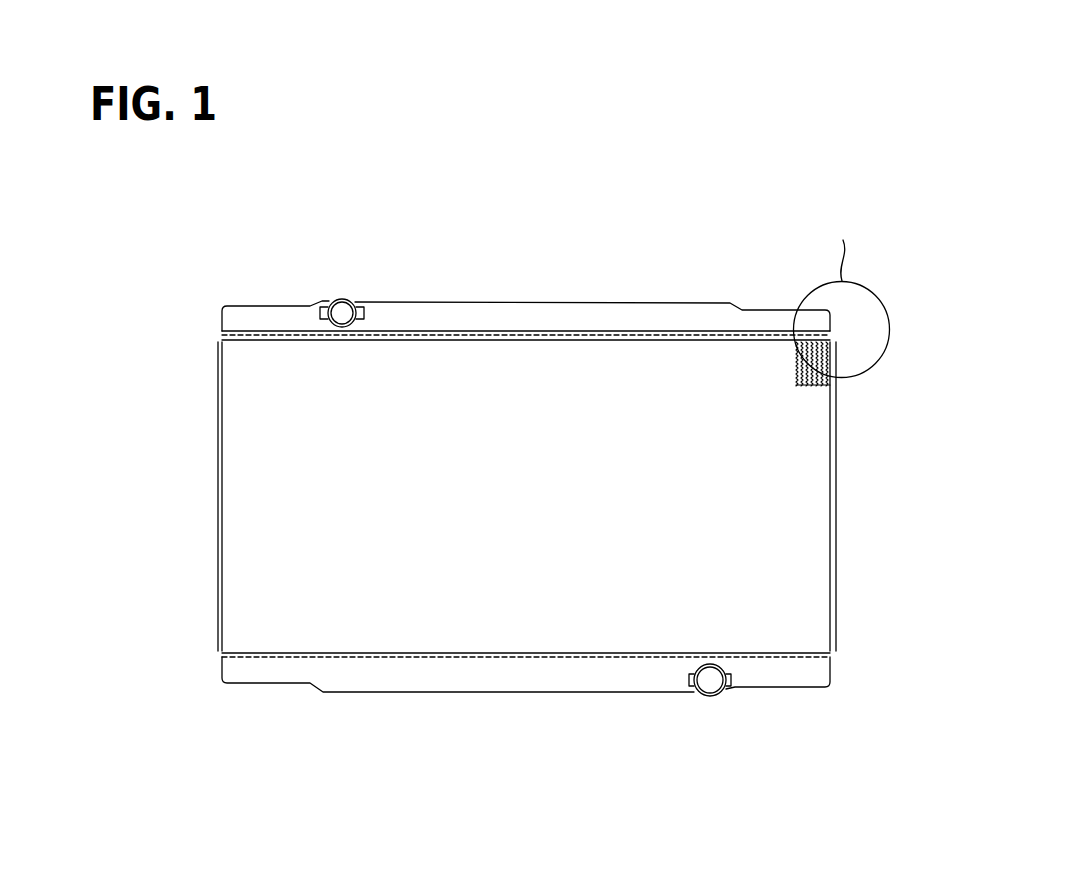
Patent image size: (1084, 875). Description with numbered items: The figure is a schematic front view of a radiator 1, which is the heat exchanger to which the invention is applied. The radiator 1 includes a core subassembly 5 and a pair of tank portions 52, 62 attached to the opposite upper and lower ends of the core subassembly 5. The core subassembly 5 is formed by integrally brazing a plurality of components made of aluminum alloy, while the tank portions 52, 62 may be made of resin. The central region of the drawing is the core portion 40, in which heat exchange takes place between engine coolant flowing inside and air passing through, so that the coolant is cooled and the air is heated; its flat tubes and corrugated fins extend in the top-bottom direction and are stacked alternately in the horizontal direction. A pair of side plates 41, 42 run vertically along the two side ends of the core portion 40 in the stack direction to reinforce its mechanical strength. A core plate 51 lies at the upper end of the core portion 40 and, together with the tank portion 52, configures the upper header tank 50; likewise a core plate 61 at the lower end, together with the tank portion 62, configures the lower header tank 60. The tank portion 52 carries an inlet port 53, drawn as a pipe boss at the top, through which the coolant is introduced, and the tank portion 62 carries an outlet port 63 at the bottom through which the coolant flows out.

The radiator 1 is at (728, 242).
The core subassembly 5 is at (190, 387).
The core portion 40 is at (815, 448).
The side plate 41 is at (833, 515).
The side plate 42 is at (220, 483).
The upper header tank 50 is at (638, 232).
The core plate 51 is at (550, 330).
The tank portion 52 is at (620, 308).
The inlet port 53 is at (343, 298).
The lower header tank 60 is at (468, 745).
The core plate 61 is at (443, 657).
The tank portion 62 is at (370, 683).
The outlet port 63 is at (710, 697).